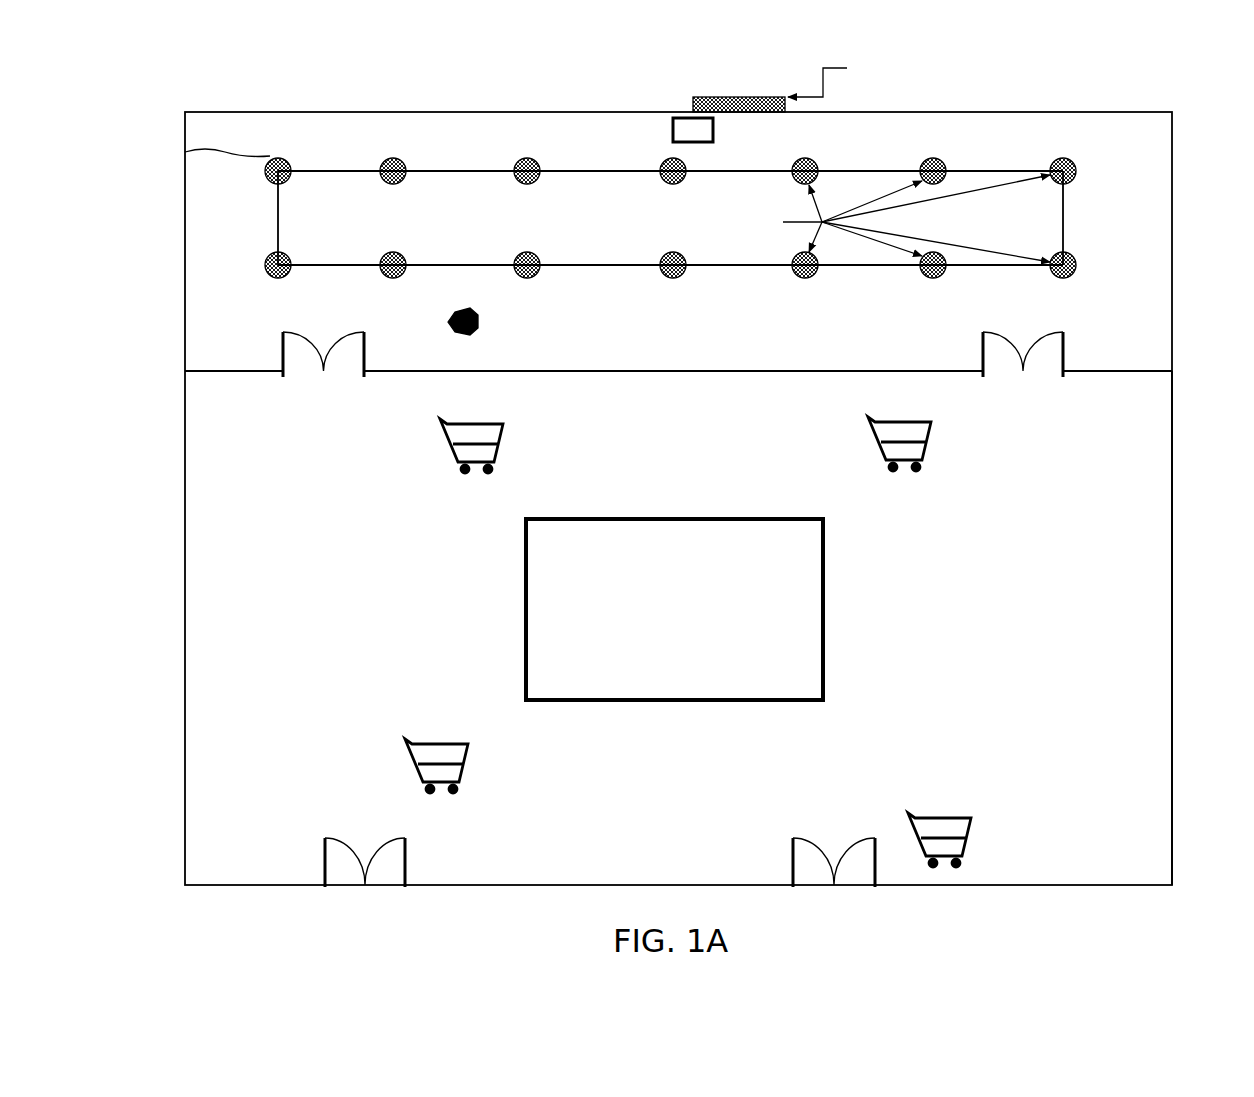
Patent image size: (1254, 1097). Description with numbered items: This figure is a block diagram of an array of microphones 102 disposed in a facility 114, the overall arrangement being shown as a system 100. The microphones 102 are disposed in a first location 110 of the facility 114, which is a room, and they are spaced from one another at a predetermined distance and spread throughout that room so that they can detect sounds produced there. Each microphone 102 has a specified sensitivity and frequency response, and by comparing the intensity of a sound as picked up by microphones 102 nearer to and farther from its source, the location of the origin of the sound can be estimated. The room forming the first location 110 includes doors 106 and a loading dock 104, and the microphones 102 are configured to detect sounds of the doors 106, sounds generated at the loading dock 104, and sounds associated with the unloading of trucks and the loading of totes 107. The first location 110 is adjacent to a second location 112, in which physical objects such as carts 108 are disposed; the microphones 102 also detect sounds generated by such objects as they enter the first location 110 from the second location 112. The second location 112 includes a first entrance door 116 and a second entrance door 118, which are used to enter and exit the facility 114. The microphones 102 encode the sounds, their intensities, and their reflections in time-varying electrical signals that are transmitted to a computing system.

The facility 100 is at (1155, 99).
The microphones 102 is at (270, 163).
The loading dock 104 is at (765, 97).
The doors 106 is at (297, 372).
The totes 107 is at (672, 129).
The carts 108 is at (455, 468).
The first location 110 is at (1150, 250).
The second location 112 is at (1073, 512).
The facility 114 is at (1175, 587).
The first entrance door 116 is at (327, 887).
The second entrance door 118 is at (842, 886).